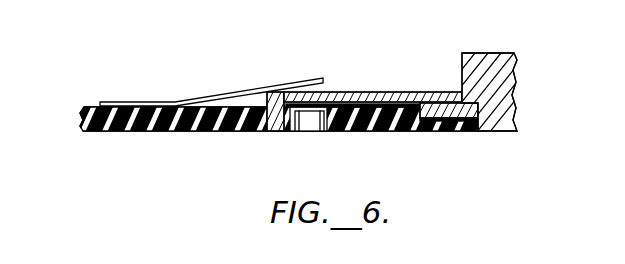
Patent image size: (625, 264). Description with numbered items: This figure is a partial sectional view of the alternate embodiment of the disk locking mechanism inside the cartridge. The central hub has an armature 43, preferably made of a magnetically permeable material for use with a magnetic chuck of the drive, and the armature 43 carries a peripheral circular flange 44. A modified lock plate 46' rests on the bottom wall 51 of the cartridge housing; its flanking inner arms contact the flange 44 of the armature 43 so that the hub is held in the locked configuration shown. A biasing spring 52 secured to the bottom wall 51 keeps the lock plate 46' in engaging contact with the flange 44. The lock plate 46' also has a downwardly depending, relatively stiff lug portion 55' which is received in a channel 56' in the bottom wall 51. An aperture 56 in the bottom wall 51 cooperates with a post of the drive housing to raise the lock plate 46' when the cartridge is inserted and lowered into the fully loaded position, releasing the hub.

The armature portion 43 is at (508, 133).
The peripheral circular flange 44 is at (440, 112).
The modified lock plate 46' is at (375, 75).
The bottom wall 51 is at (112, 133).
The biasing spring 52 is at (221, 94).
The lug portion 55' is at (299, 140).
The aperture 56 is at (333, 142).
The channel 56' is at (248, 131).